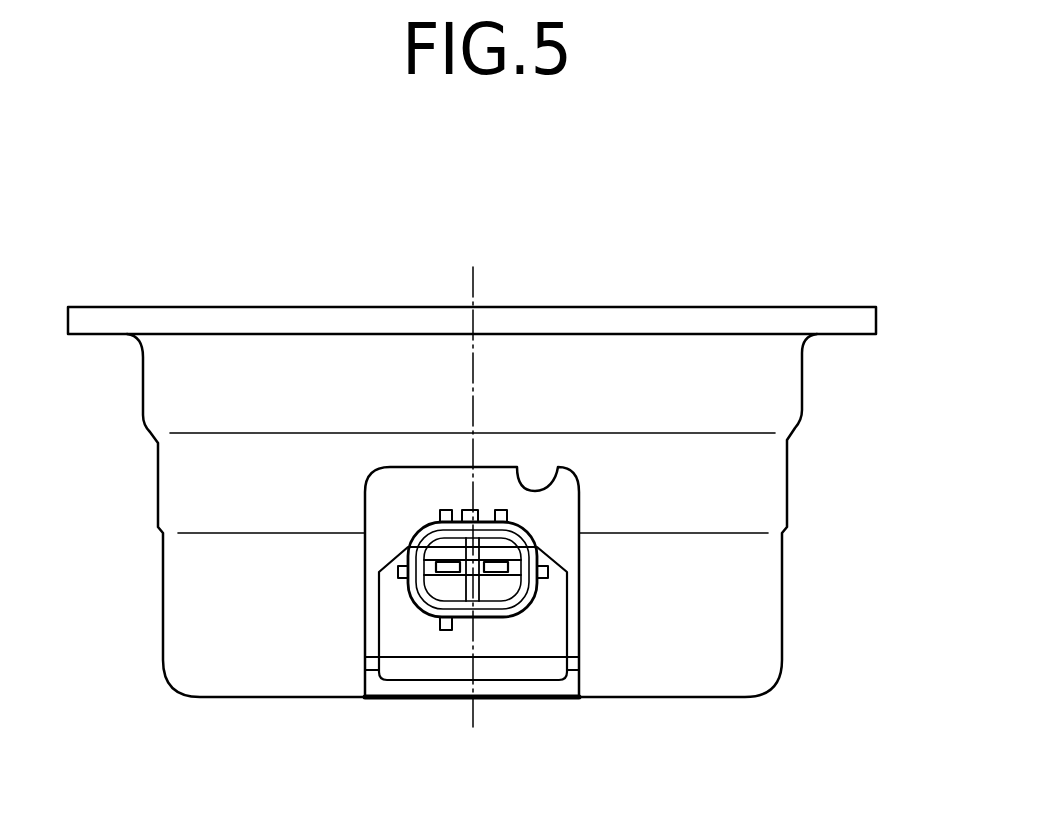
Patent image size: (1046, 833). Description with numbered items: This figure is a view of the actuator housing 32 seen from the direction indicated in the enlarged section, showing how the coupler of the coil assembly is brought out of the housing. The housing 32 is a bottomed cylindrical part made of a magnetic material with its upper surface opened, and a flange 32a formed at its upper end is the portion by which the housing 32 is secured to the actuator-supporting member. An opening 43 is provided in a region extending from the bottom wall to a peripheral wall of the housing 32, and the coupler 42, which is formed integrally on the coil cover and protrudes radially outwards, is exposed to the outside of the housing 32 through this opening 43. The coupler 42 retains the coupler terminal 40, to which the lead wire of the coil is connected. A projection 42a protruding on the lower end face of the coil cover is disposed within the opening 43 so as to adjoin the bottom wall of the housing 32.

The housing 32 is at (760, 489).
The flange 32a is at (852, 318).
The coupler terminal 40 is at (500, 558).
The coupler 42 is at (415, 612).
The projection 42a is at (518, 672).
The opening 43 is at (555, 478).